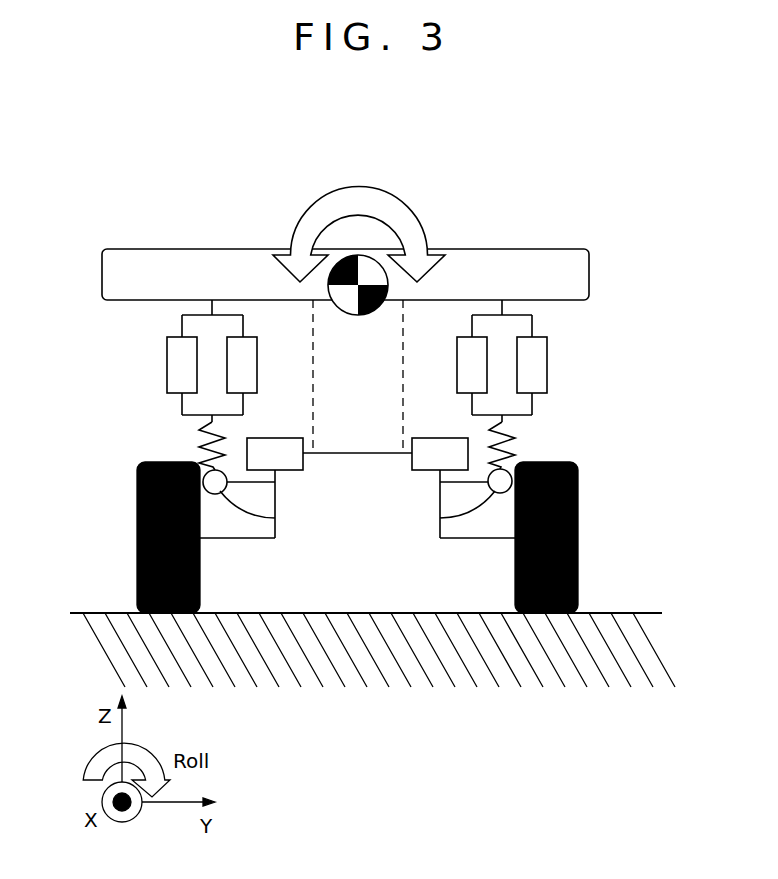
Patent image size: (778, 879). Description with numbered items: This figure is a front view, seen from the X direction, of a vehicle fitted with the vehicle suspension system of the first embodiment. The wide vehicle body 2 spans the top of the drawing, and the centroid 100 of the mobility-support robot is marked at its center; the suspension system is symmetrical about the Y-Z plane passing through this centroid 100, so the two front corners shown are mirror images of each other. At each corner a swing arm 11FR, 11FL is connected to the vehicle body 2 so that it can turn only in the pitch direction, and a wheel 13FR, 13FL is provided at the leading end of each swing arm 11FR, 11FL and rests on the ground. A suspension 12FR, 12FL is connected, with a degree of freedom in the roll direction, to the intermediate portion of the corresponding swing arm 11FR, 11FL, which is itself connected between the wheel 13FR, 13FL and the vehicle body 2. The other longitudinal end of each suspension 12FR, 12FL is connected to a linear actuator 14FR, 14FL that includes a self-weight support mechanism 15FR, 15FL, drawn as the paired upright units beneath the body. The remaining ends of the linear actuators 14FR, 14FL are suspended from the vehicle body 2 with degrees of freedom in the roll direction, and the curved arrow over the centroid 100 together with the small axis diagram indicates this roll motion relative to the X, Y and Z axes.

The vehicle body 2 is at (476, 272).
The centroid 100 is at (367, 265).
The swing arm 11FR is at (205, 475).
The swing arm 11FL is at (522, 462).
The suspension 12FR is at (199, 437).
The suspension 12FL is at (512, 435).
The wheel 13FR is at (137, 512).
The wheel 13FL is at (578, 512).
The linear actuator 14FR is at (235, 337).
The linear actuator 14FL is at (548, 352).
The self-weight support mechanism 15FR is at (167, 352).
The self-weight support mechanism 15FL is at (478, 337).